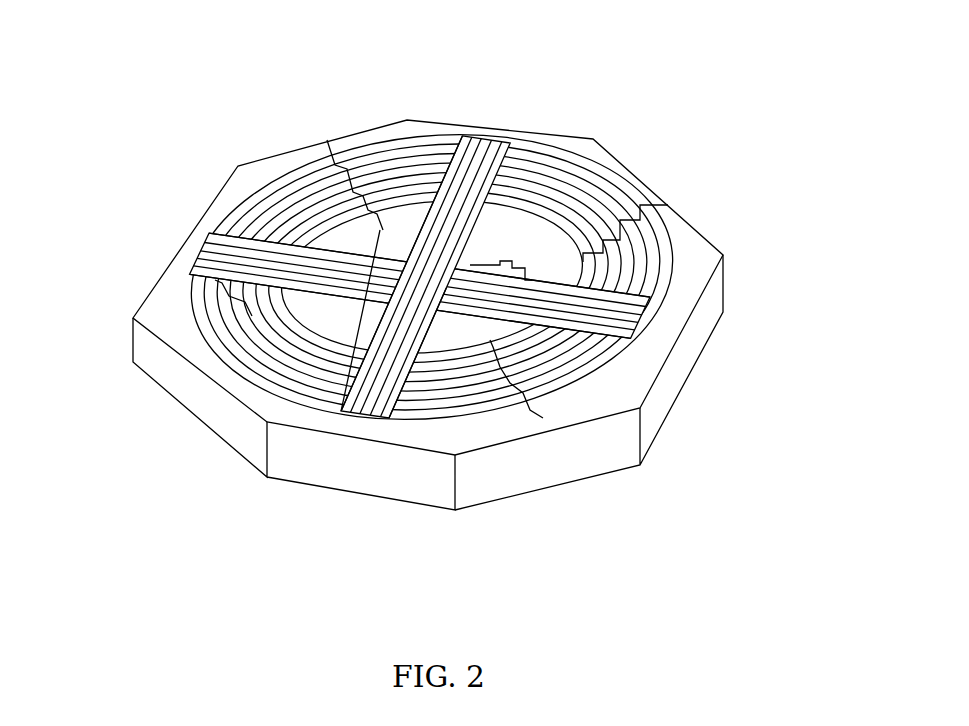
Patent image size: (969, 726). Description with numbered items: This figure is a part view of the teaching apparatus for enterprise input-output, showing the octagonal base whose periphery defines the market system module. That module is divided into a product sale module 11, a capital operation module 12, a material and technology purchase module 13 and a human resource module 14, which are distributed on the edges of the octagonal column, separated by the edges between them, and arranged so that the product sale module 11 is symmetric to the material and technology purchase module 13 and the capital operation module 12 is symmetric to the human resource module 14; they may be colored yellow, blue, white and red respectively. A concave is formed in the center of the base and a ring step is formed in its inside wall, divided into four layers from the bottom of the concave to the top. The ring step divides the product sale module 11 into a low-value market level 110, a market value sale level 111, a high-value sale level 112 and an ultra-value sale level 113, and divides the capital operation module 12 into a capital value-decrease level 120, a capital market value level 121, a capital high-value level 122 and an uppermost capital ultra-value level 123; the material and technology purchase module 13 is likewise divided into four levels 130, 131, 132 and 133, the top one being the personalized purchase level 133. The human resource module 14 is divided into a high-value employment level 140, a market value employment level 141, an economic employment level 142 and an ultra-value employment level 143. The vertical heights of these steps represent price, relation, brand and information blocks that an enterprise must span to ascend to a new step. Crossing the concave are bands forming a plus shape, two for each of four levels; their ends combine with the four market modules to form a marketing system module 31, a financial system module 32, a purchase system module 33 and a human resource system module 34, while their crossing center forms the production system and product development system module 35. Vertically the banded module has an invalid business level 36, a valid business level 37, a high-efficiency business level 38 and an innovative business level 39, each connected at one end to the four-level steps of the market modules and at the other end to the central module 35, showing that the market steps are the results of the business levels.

The product sale module 11 is at (217, 183).
The capital operation module 12 is at (403, 432).
The material and technology purchase module 13 is at (647, 347).
The human resource module 14 is at (485, 160).
The marketing system module 31 is at (198, 250).
The financial system module 32 is at (420, 367).
The purchase system module 33 is at (643, 337).
The human resource system module 34 is at (512, 148).
The production system and product development system module 35 is at (427, 257).
The invalid business level 36 is at (527, 210).
The valid business level 37 is at (545, 160).
The high-efficiency business level 38 is at (575, 150).
The innovative business level 39 is at (528, 150).
The low-value market level 110 is at (257, 330).
The market value sale level 111 is at (233, 310).
The high-value sale level 112 is at (208, 288).
The ultra-value sale level 113 is at (200, 257).
The capital value-decrease level 120 is at (338, 355).
The capital market value level 121 is at (334, 365).
The capital high-value level 122 is at (335, 395).
The capital ultra-value level 123 is at (347, 427).
The material and technology purchase module level 130 is at (648, 278).
The material and technology purchase module level 131 is at (625, 286).
The material and technology purchase module level 132 is at (662, 306).
The personalized purchase level 133 is at (655, 322).
The high-value employment level 140 is at (437, 180).
The market value employment level 141 is at (420, 160).
The economic employment level 142 is at (450, 160).
The ultra-value employment level 143 is at (462, 160).